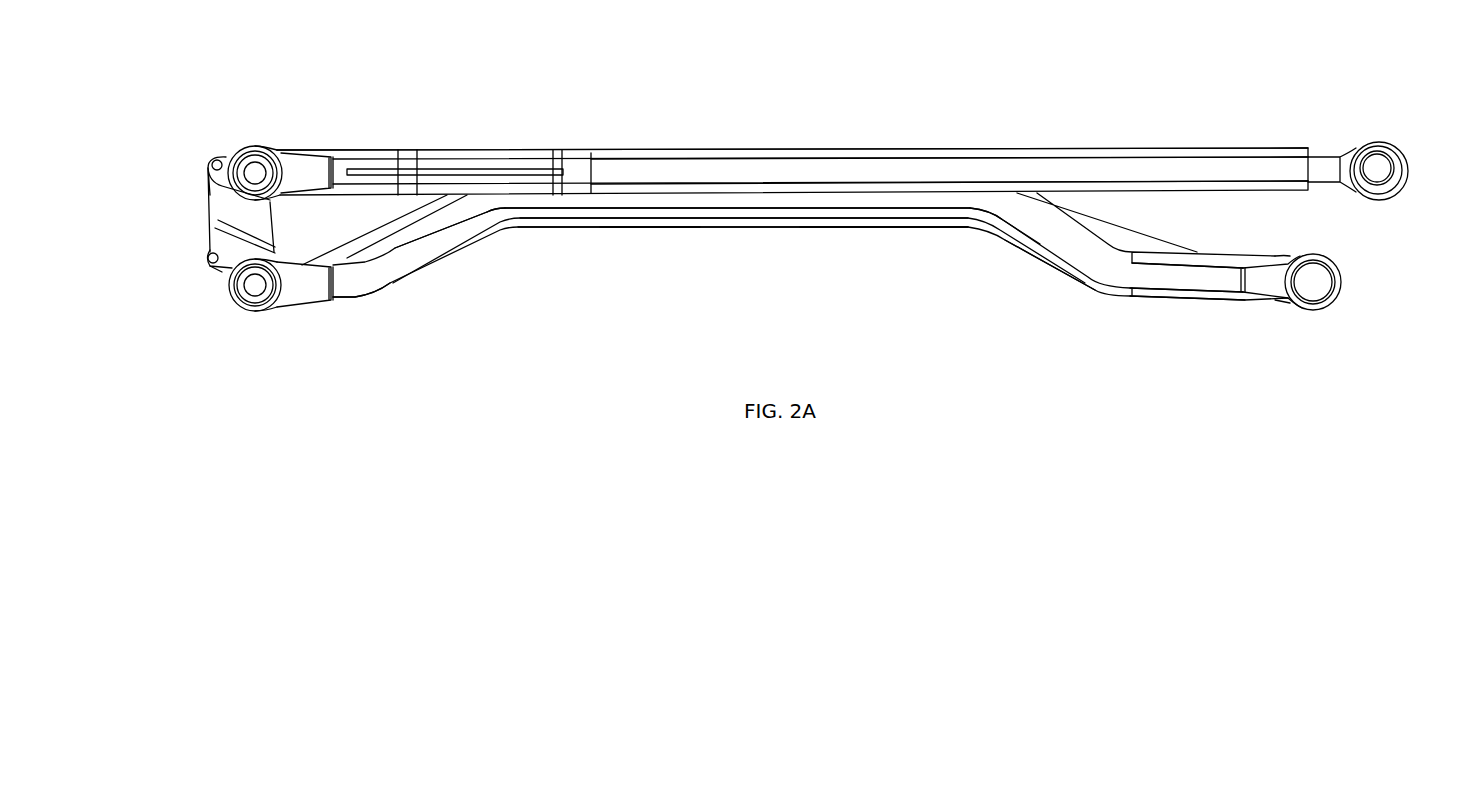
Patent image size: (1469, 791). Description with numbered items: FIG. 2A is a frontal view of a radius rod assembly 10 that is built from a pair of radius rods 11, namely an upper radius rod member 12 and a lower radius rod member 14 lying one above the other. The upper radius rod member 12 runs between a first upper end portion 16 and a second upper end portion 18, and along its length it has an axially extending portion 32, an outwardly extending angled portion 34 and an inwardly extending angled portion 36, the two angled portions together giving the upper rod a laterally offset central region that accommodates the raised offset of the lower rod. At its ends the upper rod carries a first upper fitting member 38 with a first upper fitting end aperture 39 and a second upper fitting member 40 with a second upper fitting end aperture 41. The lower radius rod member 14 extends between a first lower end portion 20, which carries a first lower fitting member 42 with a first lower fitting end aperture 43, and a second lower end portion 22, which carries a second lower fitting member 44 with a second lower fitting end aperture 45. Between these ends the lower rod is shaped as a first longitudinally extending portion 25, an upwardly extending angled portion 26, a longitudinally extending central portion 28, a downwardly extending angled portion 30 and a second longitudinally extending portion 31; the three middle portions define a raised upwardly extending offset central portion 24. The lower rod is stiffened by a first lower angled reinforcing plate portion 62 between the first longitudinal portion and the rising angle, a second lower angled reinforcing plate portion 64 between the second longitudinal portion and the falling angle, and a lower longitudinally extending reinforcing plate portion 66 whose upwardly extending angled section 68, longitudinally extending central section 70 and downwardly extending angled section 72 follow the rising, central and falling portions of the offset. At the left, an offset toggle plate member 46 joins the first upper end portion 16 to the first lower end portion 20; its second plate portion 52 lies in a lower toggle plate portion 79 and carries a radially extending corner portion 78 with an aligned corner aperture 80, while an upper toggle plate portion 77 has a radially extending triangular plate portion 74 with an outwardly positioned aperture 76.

The radius rod assembly 10 is at (888, 46).
The pair of radius rods 11 is at (1172, 313).
The upper radius rod member 12 is at (431, 146).
The lower radius rod member 14 is at (1100, 310).
The first upper end portion 16 is at (282, 148).
The second upper end portion 18 is at (1412, 148).
The first lower end portion 20 is at (278, 320).
The second lower end portion 22 is at (1312, 318).
The raised upwardly extending offset central portion 24 is at (677, 236).
The first longitudinally extending portion 25 is at (345, 302).
The upwardly extending angled portion 26 is at (488, 220).
The longitudinally extending central portion 28 is at (823, 219).
The downwardly extending angled portion 30 is at (1040, 256).
The second longitudinally extending portion 31 is at (1216, 308).
The axially extending portion 32 is at (400, 150).
The outwardly extending angled portion 34 is at (552, 150).
The inwardly extending angled portion 36 is at (716, 150).
The first upper fitting member 38 is at (262, 148).
The first upper fitting end aperture 39 is at (255, 172).
The second upper fitting member 40 is at (1355, 148).
The second upper fitting end aperture 41 is at (1380, 168).
The first lower fitting member 42 is at (262, 311).
The first lower fitting end aperture 43 is at (255, 287).
The second lower fitting member 44 is at (1342, 292).
The second lower fitting end aperture 45 is at (1312, 282).
The offset toggle plate member 46 is at (196, 208).
The second plate portion 52 is at (222, 242).
The first lower angled reinforcing plate portion 62 is at (378, 238).
The second lower angled reinforcing plate portion 64 is at (1122, 237).
The lower longitudinally extending reinforcing plate portion 66 is at (605, 236).
The upwardly extending angled section 68 is at (483, 243).
The longitudinally extending central section 70 is at (760, 222).
The downwardly extending angled section 72 is at (995, 236).
The radially extending triangular plate portion 74 is at (232, 160).
The outwardly positioned aperture 76 is at (212, 162).
The upper toggle plate portion 77 is at (204, 177).
The radially extending corner portion 78 is at (208, 265).
The lower toggle plate portion 79 is at (202, 263).
The aligned corner aperture 80 is at (213, 264).